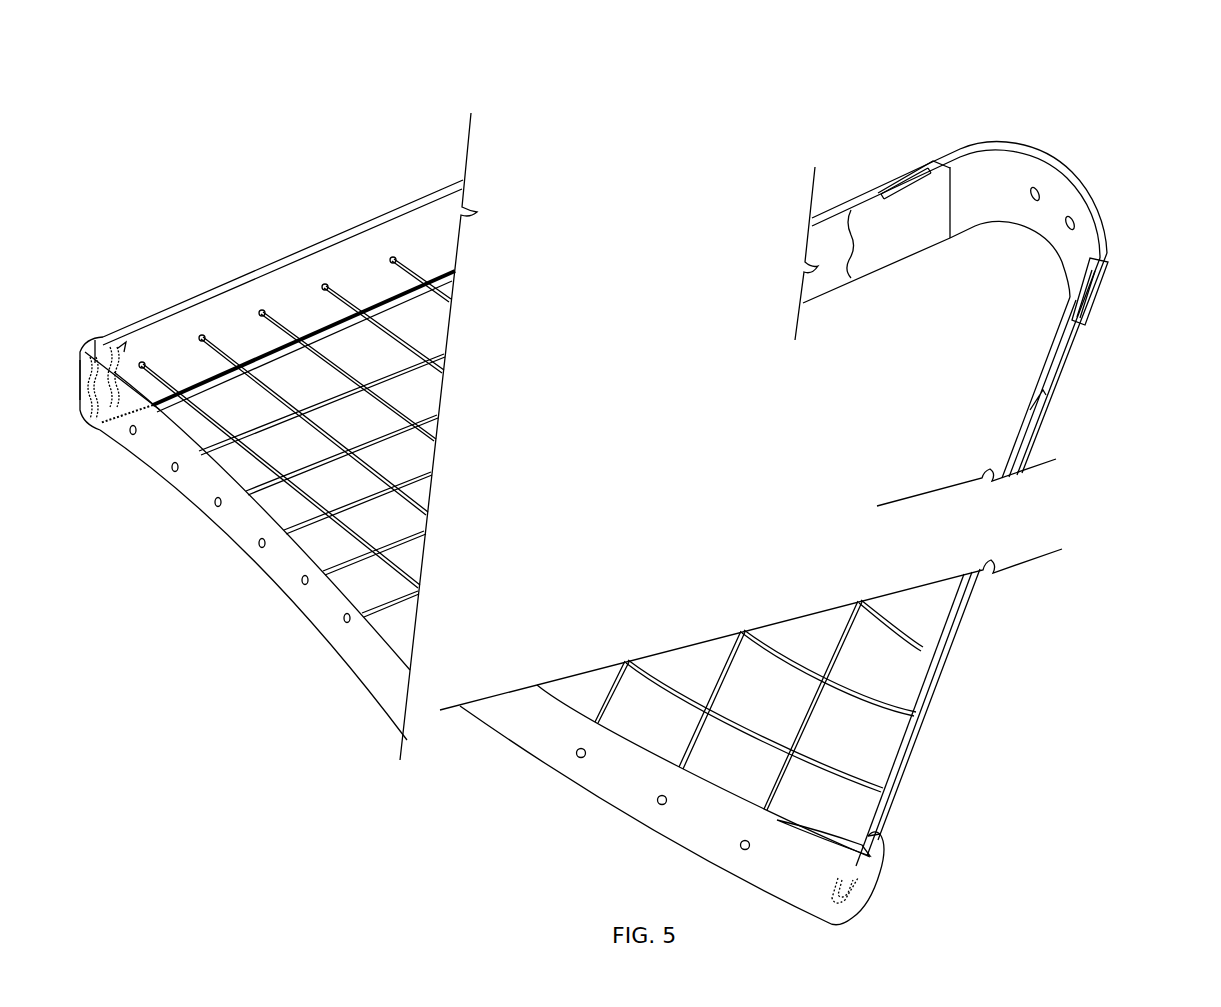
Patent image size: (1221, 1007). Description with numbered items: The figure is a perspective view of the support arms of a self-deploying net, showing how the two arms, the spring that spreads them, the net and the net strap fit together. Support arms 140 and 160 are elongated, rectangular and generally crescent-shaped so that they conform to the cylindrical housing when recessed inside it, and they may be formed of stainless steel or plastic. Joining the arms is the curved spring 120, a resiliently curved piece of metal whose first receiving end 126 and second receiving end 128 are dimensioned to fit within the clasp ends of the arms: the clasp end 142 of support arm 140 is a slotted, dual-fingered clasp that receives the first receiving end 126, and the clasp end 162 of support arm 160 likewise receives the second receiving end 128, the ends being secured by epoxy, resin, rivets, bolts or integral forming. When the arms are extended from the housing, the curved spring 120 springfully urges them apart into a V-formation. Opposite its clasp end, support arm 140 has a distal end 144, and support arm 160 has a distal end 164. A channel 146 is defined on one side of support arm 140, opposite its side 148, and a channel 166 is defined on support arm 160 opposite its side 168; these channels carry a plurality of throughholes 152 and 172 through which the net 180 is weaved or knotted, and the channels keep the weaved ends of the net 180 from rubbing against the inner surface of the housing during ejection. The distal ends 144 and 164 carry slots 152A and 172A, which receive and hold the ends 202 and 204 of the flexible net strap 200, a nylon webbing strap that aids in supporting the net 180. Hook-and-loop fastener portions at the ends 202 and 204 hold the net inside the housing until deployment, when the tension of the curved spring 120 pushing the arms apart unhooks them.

The curved spring 120 is at (1022, 164).
The first receiving end 126 is at (912, 183).
The second receiving end 128 is at (1084, 313).
The support arm 140 is at (175, 333).
The clasp end 142 is at (915, 242).
The distal end 144 is at (92, 342).
The channel 146 is at (86, 386).
The side 148 is at (406, 235).
The throughholes 152 is at (393, 259).
The slot 152A is at (124, 345).
The support arm 160 is at (1072, 366).
The clasp end 162 is at (1106, 270).
The distal end 164 is at (878, 840).
The channel 166 is at (862, 878).
The side 168 is at (882, 750).
The throughholes 172 is at (896, 792).
The slot 172A is at (838, 877).
The net 180 is at (862, 690).
The net strap 200 is at (205, 516).
The end 202 is at (138, 382).
The end 204 is at (831, 841).